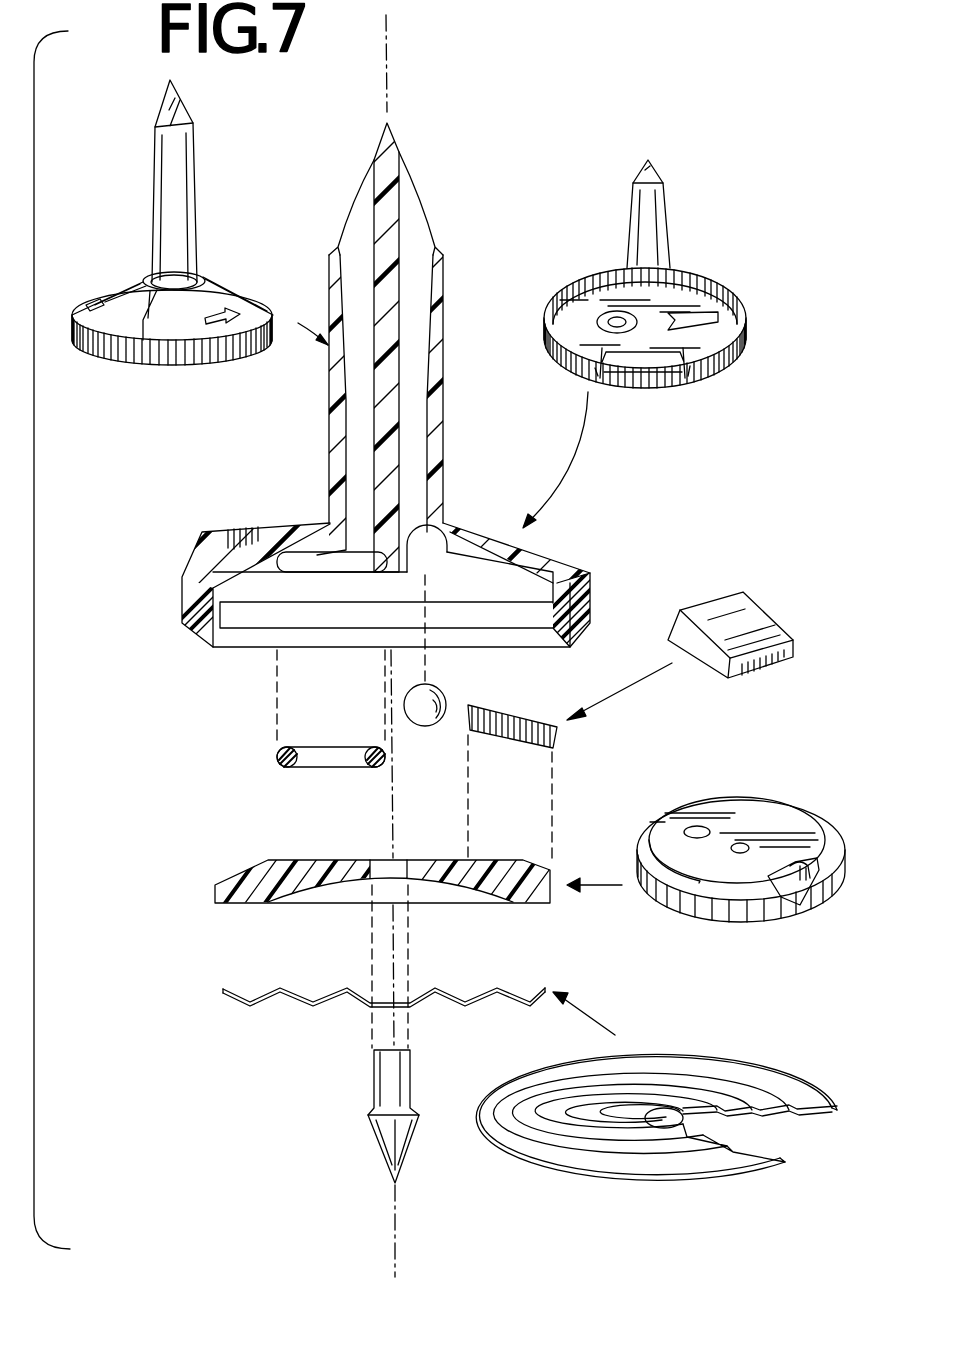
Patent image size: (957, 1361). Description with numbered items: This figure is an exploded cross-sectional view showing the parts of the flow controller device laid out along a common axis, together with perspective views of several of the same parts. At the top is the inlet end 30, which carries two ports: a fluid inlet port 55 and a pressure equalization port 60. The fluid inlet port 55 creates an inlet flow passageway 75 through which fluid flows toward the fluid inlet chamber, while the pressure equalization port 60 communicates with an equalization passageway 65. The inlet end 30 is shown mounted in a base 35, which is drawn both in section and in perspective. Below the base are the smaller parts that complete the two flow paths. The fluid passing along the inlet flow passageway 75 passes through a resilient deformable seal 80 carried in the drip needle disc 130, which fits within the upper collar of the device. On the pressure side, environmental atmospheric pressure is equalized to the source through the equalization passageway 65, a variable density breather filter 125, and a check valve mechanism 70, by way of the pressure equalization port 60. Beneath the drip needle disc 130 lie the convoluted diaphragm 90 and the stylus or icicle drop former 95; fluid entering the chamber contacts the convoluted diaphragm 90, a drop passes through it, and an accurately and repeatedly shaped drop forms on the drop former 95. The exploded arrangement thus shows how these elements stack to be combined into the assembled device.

The inlet end 30 is at (166, 115).
The base knob 35 is at (96, 305).
The fluid inlet port 55 is at (360, 237).
The pressure equalization port 60 is at (422, 238).
The equalization passageway 65 is at (412, 416).
The check valve mechanism 70 is at (426, 700).
The inlet flow passageway 75 is at (358, 414).
The resilient deformable seal 80 is at (285, 762).
The convoluted diaphragm 90 is at (252, 993).
The stylus or icicle drop former 95 is at (392, 1100).
The variable density breather filter 125 is at (510, 712).
The drip needle disc 130 is at (248, 862).